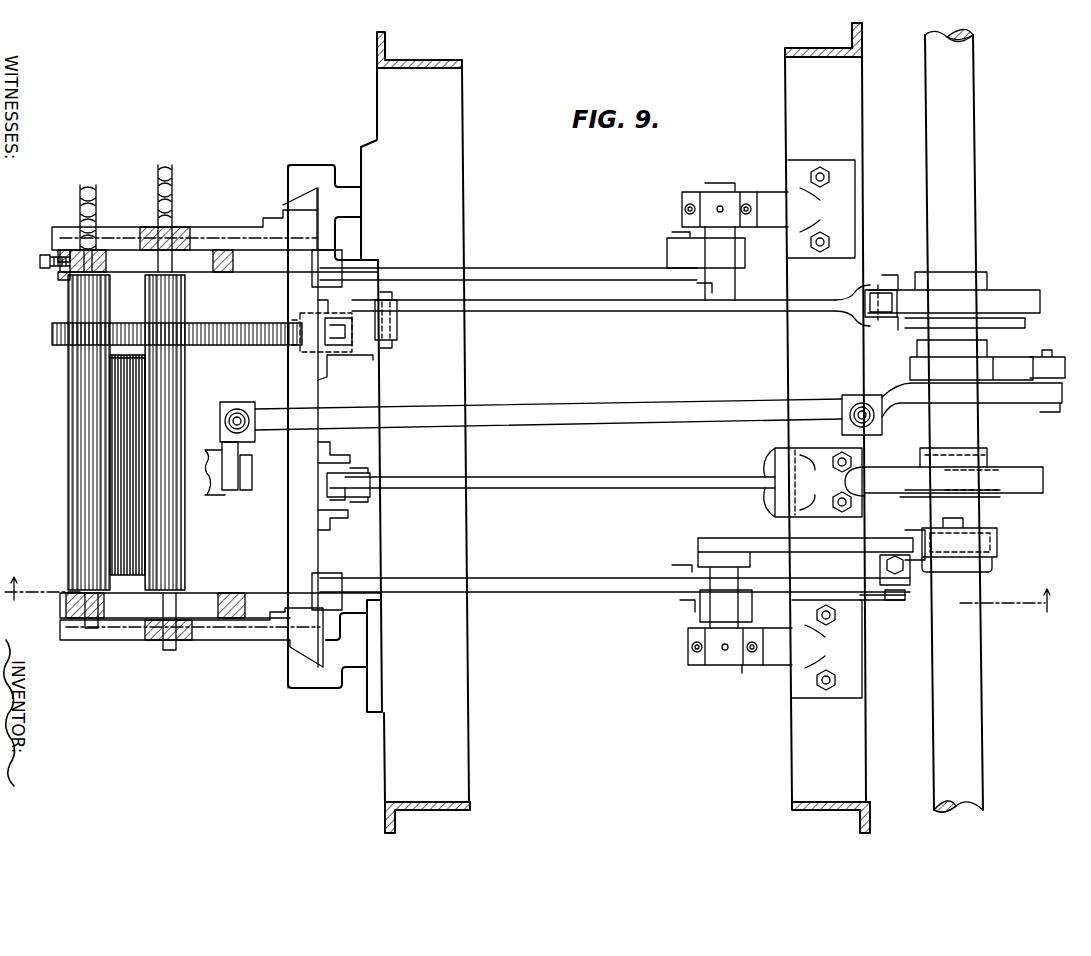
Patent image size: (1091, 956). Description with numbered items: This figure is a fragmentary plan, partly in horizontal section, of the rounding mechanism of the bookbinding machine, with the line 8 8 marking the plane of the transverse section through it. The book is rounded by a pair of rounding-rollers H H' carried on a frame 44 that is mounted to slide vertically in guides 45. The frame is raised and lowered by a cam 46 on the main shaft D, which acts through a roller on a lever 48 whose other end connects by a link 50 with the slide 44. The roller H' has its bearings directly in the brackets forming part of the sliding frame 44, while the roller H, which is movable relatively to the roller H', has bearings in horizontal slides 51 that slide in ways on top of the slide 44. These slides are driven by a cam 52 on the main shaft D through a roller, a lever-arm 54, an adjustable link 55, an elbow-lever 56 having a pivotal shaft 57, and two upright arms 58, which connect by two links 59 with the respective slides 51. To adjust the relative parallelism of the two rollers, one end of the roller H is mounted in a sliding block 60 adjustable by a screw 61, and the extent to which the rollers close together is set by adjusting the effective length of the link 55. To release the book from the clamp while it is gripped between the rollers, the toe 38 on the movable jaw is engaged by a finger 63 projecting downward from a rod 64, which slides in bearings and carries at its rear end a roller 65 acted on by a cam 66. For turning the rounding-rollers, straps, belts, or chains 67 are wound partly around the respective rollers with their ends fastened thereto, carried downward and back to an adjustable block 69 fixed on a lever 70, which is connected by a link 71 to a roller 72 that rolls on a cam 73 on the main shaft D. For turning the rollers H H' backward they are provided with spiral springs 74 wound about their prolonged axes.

The toe 38 is at (246, 482).
The frame 44 is at (250, 228).
The guides 45 is at (328, 405).
The cam 46 is at (1043, 480).
The lever 48 is at (592, 490).
The link 50 is at (370, 478).
The horizontal slides 51 is at (242, 270).
The cam 52 is at (997, 541).
The lever-arm 54 is at (818, 546).
The adjustable link 55 is at (908, 577).
The elbow-lever 56 is at (872, 586).
The pivotal shaft 57 is at (790, 428).
The upright arms 58 is at (664, 610).
The links 59 is at (538, 276).
The sliding block 60 is at (66, 270).
The screw 61 is at (42, 261).
The finger 63 is at (232, 482).
The rod 64 is at (620, 412).
The roller 65 is at (1070, 367).
The cam 66 is at (1010, 367).
The straps 67 is at (177, 321).
The adjustable block 69 is at (337, 348).
The lever 70 is at (398, 330).
The link 71 is at (562, 314).
The roller 72 is at (870, 308).
The cam 73 is at (1047, 302).
The spiral springs 74 is at (128, 188).
The rounding-roller H is at (74, 432).
The rounding-roller H' is at (163, 432).
The main shaft D is at (954, 420).
The section line 8 is at (537, 595).